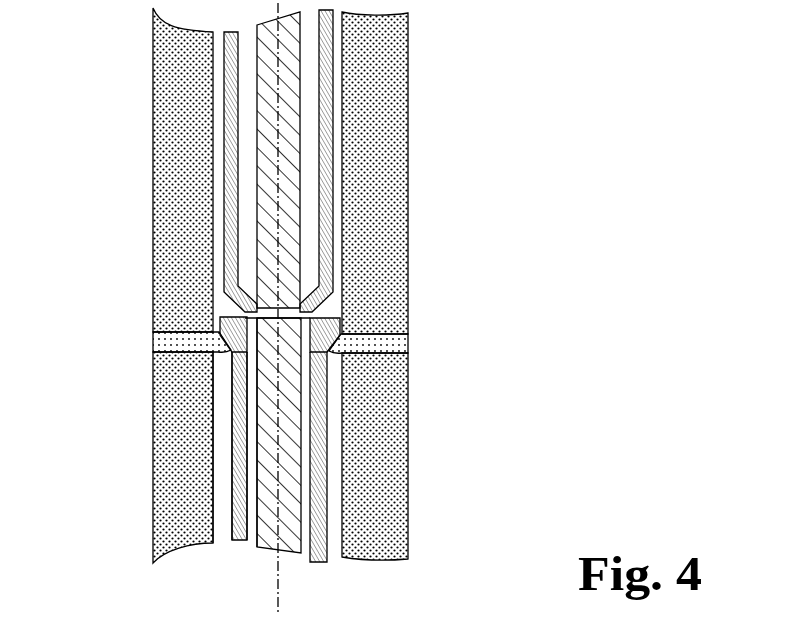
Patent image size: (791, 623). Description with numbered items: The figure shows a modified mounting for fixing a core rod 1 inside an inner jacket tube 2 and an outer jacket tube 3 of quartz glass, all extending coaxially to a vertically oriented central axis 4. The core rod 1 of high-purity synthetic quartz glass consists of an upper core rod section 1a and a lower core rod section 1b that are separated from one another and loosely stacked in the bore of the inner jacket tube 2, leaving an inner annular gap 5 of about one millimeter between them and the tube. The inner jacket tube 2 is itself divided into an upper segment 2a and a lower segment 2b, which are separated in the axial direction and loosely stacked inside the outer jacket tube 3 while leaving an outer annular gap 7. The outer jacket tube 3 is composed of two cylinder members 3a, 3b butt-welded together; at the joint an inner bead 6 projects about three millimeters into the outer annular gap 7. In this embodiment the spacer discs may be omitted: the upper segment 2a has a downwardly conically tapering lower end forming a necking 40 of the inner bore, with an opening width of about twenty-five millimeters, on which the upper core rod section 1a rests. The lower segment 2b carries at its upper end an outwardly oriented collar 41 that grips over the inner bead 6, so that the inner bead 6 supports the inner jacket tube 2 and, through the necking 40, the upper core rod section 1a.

The core rod 1 is at (264, 282).
The upper core rod section 1a is at (278, 125).
The lower core rod section 1b is at (303, 390).
The inner jacket tube 2 is at (220, 178).
The upper segment 2a is at (331, 174).
The lower segment 2b is at (327, 455).
The outer jacket tube 3 is at (152, 234).
The cylinder member 3a is at (370, 213).
The cylinder member 3b is at (353, 515).
The central axis 4 is at (277, 577).
The inner annular gap 5 is at (257, 378).
The inner bead 6 is at (173, 343).
The outer annular gap 7 is at (227, 450).
The necking 40 is at (250, 317).
The collar 41 is at (343, 318).